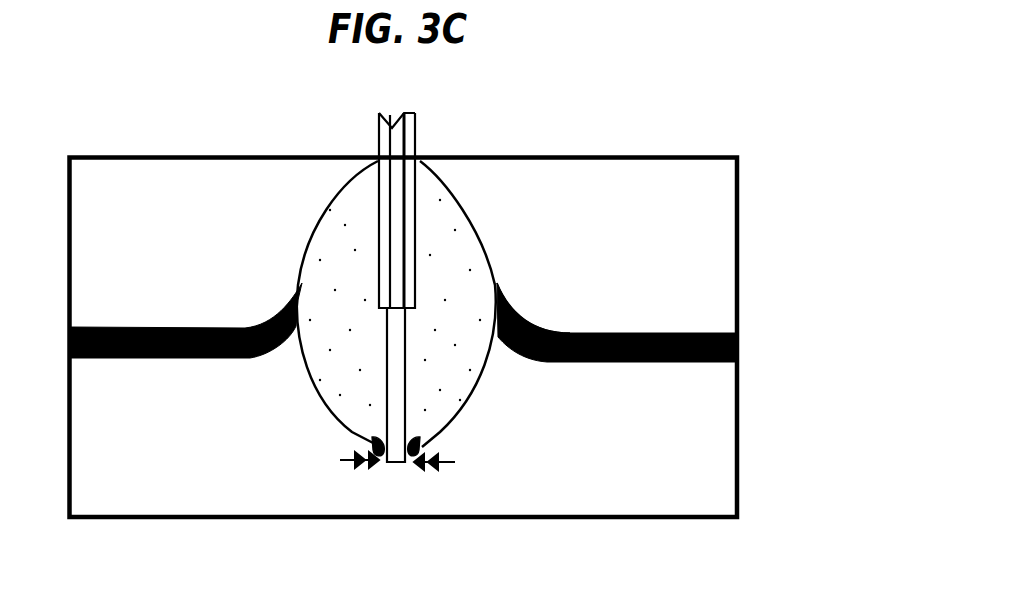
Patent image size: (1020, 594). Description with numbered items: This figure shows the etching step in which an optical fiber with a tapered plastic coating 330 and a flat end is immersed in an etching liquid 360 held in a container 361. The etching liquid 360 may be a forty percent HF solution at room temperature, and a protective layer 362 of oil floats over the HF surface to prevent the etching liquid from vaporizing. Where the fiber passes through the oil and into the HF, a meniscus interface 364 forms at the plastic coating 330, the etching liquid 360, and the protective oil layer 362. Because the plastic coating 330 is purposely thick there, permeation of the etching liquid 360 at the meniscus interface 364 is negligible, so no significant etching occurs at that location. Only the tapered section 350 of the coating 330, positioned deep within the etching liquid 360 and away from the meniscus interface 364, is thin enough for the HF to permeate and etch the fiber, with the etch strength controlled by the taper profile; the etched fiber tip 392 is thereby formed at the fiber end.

The plastic coating 330 is at (462, 250).
The tapered section 350 is at (438, 428).
The etching liquid 360 is at (663, 475).
The container 361 is at (737, 275).
The protective layer 362 is at (198, 327).
The meniscus interface 364 is at (513, 292).
The fiber core tip 392 is at (392, 463).